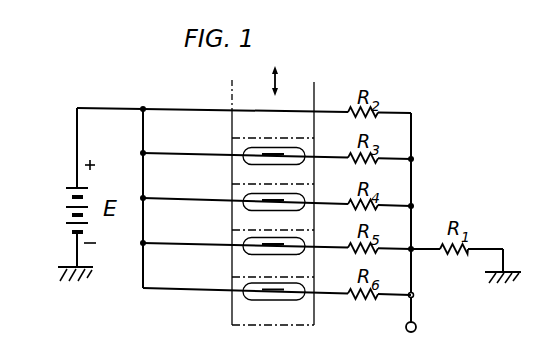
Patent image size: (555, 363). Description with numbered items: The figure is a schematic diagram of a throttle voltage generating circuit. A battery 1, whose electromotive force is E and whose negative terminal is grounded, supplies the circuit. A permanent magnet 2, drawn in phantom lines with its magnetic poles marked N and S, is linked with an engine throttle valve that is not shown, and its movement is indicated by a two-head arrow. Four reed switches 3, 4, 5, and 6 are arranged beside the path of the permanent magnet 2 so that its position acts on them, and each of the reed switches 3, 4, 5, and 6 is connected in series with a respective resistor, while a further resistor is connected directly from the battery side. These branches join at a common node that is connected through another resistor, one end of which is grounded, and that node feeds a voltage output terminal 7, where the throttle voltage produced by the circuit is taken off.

The battery 1 is at (63, 208).
The permanent magnet 2 is at (297, 97).
The reed switch 3 is at (306, 151).
The reed switch 4 is at (306, 197).
The reed switch 5 is at (306, 242).
The reed switch 6 is at (306, 289).
The voltage output terminal 7 is at (413, 305).